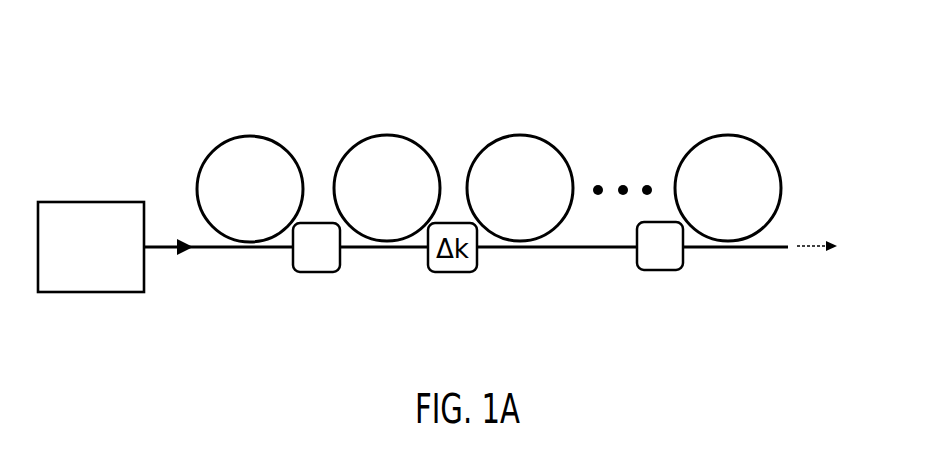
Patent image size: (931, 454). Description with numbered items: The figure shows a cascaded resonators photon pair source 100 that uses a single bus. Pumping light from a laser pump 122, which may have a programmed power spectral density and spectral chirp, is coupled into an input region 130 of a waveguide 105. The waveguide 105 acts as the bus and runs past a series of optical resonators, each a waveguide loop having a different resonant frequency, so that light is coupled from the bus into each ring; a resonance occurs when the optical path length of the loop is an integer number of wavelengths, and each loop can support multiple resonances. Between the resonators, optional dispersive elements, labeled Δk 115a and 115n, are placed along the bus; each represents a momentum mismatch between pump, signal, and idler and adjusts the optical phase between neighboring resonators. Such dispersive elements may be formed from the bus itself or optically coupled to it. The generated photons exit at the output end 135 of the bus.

The cascaded resonators photon pair source 100 is at (100, 54).
The laser pump 122 is at (48, 203).
The input region 130 is at (190, 267).
The waveguide 105 is at (510, 249).
The dispersive element (Δk) 115a is at (323, 270).
The dispersive element (Δk) 115n is at (658, 271).
The output photons 135 is at (795, 274).